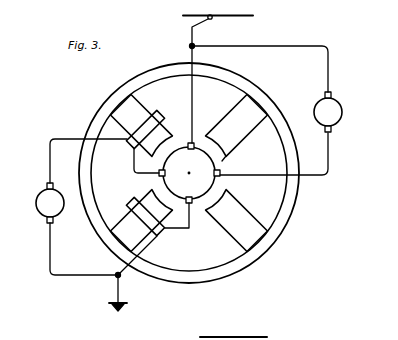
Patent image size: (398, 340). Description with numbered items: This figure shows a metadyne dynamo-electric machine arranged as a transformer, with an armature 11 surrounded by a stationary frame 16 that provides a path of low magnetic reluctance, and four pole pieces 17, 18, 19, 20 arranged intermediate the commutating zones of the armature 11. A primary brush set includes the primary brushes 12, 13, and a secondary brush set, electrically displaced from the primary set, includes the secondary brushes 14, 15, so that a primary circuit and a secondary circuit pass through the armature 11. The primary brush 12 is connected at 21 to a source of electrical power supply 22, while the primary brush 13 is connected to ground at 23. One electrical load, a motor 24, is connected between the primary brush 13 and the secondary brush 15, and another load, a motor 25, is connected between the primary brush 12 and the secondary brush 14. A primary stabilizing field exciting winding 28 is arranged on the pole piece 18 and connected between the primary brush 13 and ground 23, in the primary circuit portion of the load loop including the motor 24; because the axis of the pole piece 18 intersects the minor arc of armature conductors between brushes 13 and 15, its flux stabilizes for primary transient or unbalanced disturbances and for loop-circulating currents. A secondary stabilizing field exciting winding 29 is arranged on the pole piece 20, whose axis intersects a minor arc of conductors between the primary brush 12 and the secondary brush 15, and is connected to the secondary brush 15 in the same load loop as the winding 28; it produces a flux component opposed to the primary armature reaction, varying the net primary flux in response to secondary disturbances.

The armature 11 is at (222, 182).
The primary brush 12 is at (193, 142).
The primary brush 13 is at (191, 210).
The secondary brush 14 is at (225, 168).
The secondary brush 15 is at (156, 167).
The frame 16 is at (294, 206).
The pole piece 17 is at (245, 140).
The pole piece 18 is at (160, 210).
The pole piece 19 is at (248, 219).
The pole piece 20 is at (162, 131).
The connection 21 is at (207, 24).
The source of electrical power supply 22 is at (238, 18).
The ground 23 is at (122, 294).
The motor 24 is at (37, 206).
The motor 25 is at (339, 105).
The primary stabilizing field exciting winding 28 is at (127, 206).
The secondary stabilizing field exciting winding 29 is at (158, 114).